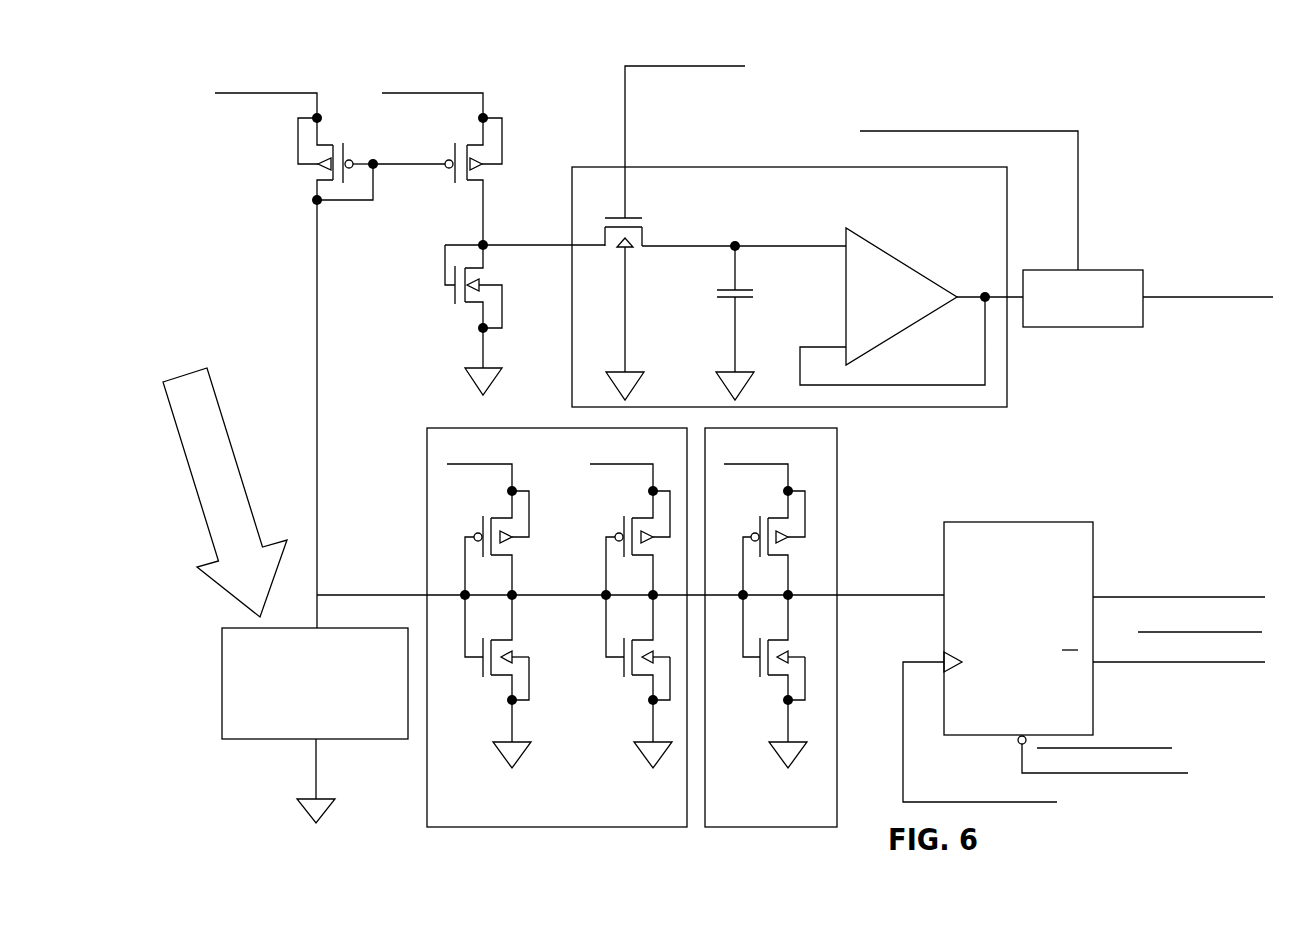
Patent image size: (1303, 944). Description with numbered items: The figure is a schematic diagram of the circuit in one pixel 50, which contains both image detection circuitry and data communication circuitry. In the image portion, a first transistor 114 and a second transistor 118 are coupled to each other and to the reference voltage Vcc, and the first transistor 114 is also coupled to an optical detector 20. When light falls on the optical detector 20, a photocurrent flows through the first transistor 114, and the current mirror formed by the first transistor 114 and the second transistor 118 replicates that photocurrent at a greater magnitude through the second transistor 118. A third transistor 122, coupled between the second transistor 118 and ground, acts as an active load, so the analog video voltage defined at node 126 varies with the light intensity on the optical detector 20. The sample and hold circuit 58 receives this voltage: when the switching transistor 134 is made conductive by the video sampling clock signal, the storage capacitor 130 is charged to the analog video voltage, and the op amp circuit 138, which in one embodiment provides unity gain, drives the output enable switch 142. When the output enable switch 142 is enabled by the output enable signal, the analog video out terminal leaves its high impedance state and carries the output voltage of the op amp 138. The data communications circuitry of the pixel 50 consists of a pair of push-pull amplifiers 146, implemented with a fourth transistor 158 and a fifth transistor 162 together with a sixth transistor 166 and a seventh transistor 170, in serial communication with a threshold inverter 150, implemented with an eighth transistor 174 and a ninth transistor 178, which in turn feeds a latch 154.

The pixel 50 is at (1244, 158).
The transistor M1 114 is at (262, 157).
The transistor M2 118 is at (520, 157).
The transistor M3 122 is at (432, 296).
The node 126 is at (487, 240).
The sample and hold circuit 58 is at (1004, 197).
The switching transistor M10 134 is at (658, 221).
The capacitor C 130 is at (716, 291).
The op amp circuit 138 is at (896, 257).
The output enable switch 142 is at (1105, 270).
The optical detector 20 is at (333, 723).
The push-pull amplifiers 146 is at (427, 529).
The transistor M4 158 is at (466, 518).
The transistor M5 162 is at (466, 677).
The transistor M6 166 is at (610, 518).
The transistor M7 170 is at (609, 674).
The threshold inverter 150 is at (838, 557).
The transistor M8 174 is at (744, 521).
The transistor M9 178 is at (739, 674).
The latch 154 is at (1031, 641).